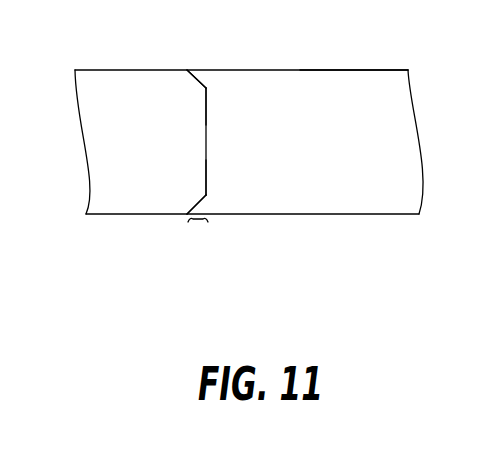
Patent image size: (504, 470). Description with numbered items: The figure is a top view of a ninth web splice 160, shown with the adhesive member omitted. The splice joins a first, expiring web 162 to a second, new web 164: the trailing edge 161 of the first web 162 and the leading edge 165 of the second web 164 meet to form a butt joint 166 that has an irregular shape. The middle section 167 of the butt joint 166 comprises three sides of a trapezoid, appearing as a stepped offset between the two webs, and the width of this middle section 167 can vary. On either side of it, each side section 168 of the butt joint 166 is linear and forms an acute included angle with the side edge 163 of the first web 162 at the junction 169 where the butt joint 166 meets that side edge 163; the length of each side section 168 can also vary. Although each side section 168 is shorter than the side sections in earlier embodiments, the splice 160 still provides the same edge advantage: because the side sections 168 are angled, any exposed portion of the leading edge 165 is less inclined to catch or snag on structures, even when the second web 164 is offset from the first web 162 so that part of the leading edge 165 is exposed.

The ninth web splice 160 is at (93, 45).
The trailing edge 161 is at (206, 173).
The first, expiring web 162 is at (377, 200).
The side edge 163 is at (385, 70).
The second, new web 164 is at (117, 200).
The leading edge 165 is at (206, 138).
The butt joint 166 is at (197, 236).
The middle section 167 is at (206, 110).
The side section 168 is at (199, 82).
The junction 169 is at (188, 70).